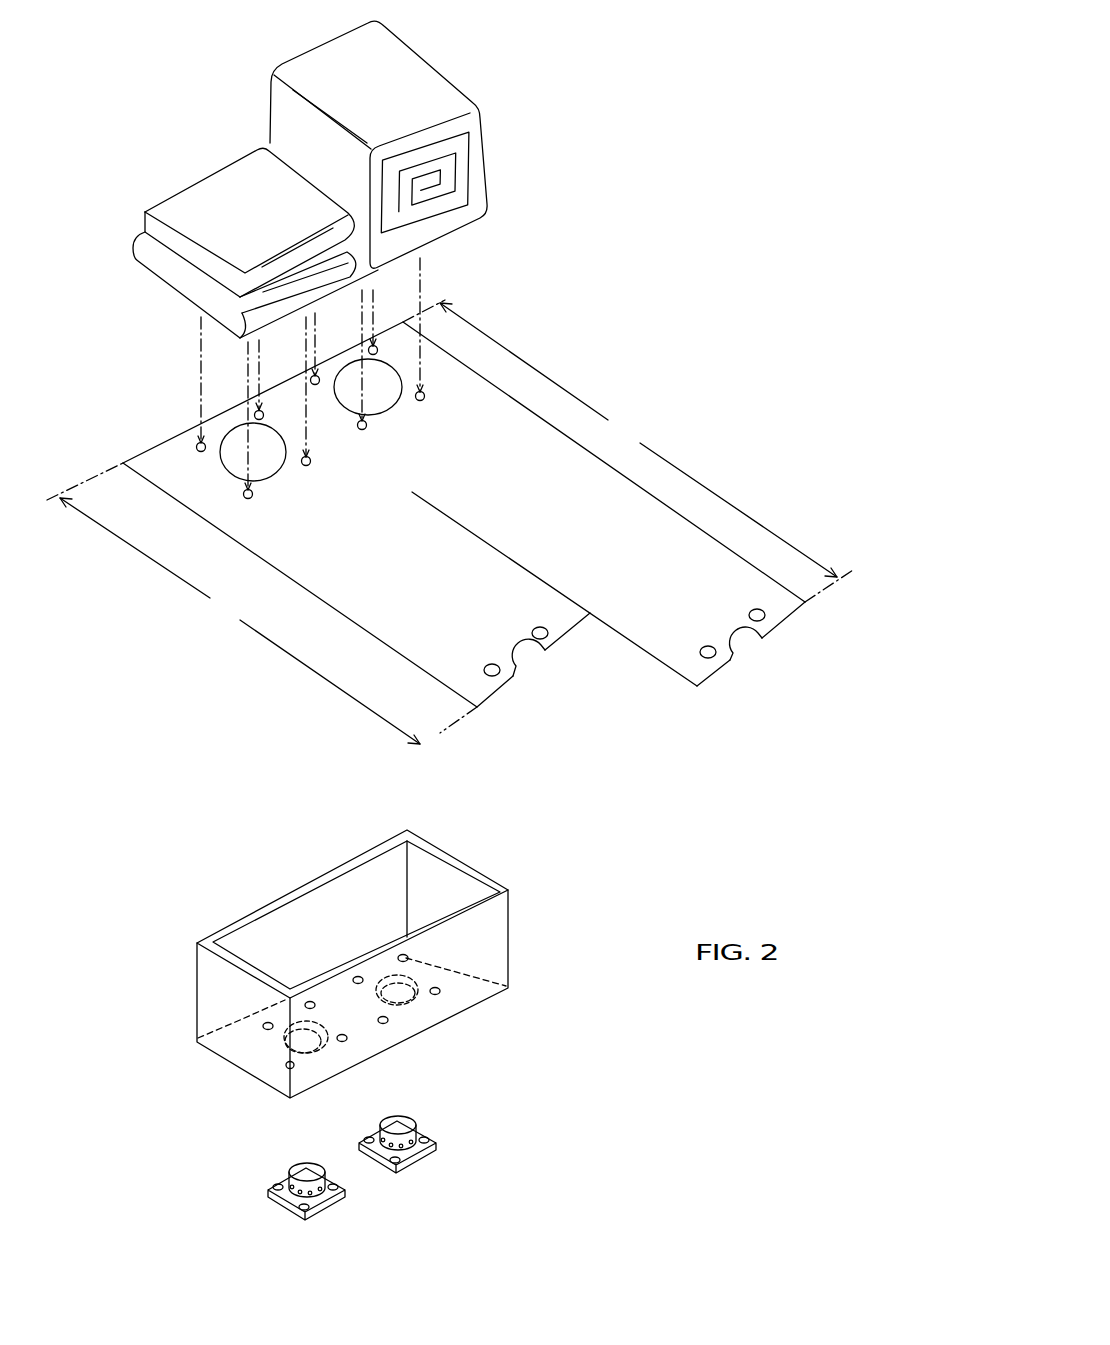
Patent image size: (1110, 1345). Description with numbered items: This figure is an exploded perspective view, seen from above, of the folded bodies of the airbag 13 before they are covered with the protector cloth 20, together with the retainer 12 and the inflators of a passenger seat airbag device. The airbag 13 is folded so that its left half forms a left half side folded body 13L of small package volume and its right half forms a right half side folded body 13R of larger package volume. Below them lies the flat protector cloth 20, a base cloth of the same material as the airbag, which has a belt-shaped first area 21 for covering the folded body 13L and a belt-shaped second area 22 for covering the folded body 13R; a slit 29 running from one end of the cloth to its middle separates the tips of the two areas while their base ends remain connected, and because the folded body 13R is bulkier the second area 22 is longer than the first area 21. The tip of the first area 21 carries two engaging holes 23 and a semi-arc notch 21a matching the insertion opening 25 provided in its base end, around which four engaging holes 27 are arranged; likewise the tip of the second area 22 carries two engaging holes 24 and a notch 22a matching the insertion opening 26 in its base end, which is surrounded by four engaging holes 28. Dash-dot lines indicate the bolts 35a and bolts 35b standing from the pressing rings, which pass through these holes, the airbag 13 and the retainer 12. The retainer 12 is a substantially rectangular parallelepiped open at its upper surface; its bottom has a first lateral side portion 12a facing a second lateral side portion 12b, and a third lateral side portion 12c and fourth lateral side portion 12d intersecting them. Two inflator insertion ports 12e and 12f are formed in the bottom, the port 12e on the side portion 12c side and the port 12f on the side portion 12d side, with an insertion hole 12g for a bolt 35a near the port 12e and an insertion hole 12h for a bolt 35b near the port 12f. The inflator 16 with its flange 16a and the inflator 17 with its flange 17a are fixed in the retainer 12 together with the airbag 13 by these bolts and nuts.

The retainer 12 is at (282, 885).
The first lateral side portion 12a is at (416, 1024).
The second lateral side portion 12b is at (226, 1018).
The third lateral side portion 12c is at (240, 1068).
The fourth lateral side portion 12d is at (494, 978).
The inflator insertion port 12e is at (320, 1048).
The inflator insertion port 12f is at (412, 1000).
The insertion hole 12g is at (264, 1028).
The insertion hole 12h is at (406, 957).
The airbag 13 is at (455, 52).
The left half side folded body 13L is at (192, 205).
The right half side folded body 13R is at (487, 140).
The inflator 16 is at (268, 1184).
The flange 16a is at (328, 1210).
The inflator 17 is at (442, 1135).
The flange 17a is at (418, 1168).
The protector cloth 20 is at (660, 698).
The first area 21 is at (418, 646).
The notch 21a is at (530, 666).
The second area 22 is at (644, 650).
The notch 22a is at (745, 648).
The engaging holes 23 is at (499, 678).
The engaging holes 24 is at (712, 660).
The insertion opening 25 is at (272, 462).
The insertion opening 26 is at (385, 395).
The engaging holes 27 is at (197, 450).
The engaging holes 28 is at (378, 352).
The slit 29 is at (522, 566).
The bolts 35a is at (196, 396).
The bolts 35b is at (432, 294).